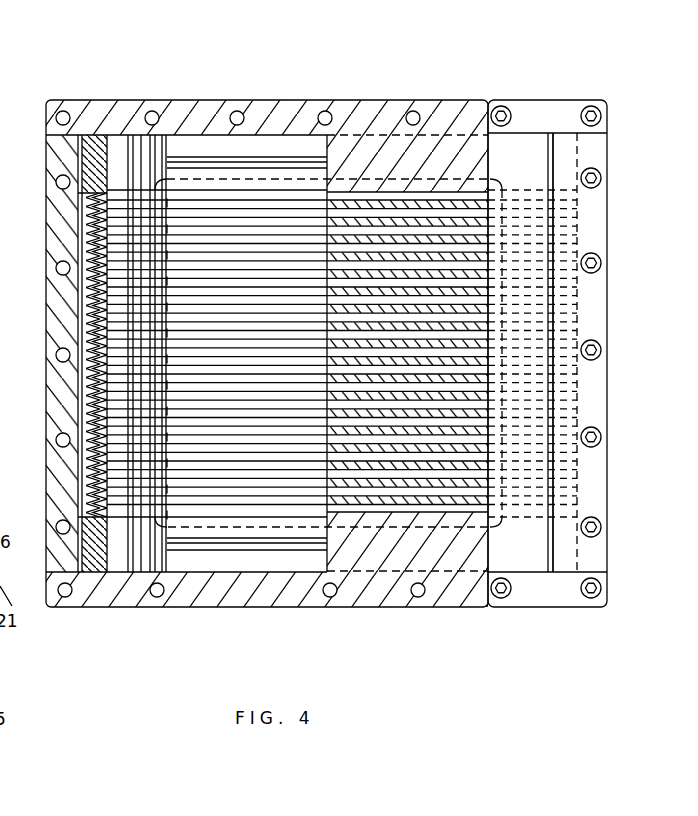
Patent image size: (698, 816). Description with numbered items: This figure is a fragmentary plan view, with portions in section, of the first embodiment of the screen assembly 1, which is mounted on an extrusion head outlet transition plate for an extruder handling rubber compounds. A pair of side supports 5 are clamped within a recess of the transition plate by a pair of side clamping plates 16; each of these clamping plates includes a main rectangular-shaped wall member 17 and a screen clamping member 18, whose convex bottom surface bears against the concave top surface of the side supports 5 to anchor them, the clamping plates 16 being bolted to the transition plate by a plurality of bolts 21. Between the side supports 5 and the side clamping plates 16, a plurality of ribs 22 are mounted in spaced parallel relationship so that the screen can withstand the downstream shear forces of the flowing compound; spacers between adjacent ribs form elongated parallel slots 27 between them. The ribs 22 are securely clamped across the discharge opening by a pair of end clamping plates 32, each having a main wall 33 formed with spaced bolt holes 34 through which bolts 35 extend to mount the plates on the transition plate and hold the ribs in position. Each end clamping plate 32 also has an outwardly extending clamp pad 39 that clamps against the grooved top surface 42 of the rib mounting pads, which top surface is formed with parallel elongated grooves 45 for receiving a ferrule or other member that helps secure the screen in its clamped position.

The screen assembly 1 is at (416, 80).
The side supports 5 is at (270, 135).
The side clamping plates 16 is at (100, 92).
The main rectangular-shaped wall member 17 is at (168, 100).
The screen clamping member 18 is at (435, 547).
The bolts 21 is at (501, 104).
The ribs 22 is at (273, 497).
The elongated parallel slots 27 is at (310, 212).
The end clamping plates 32 is at (618, 397).
The main wall 33 is at (99, 574).
The bolt holes 34 is at (60, 272).
The bolts 35 is at (604, 177).
The clamp pad 39 is at (532, 550).
The grooved top surface 42 is at (118, 172).
The parallel elongated grooves 45 is at (137, 554).